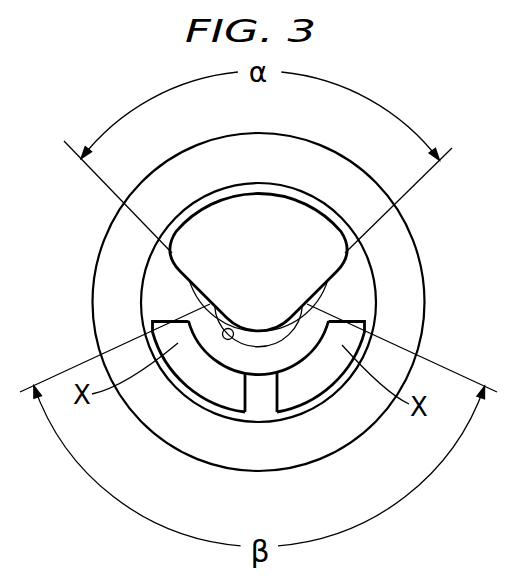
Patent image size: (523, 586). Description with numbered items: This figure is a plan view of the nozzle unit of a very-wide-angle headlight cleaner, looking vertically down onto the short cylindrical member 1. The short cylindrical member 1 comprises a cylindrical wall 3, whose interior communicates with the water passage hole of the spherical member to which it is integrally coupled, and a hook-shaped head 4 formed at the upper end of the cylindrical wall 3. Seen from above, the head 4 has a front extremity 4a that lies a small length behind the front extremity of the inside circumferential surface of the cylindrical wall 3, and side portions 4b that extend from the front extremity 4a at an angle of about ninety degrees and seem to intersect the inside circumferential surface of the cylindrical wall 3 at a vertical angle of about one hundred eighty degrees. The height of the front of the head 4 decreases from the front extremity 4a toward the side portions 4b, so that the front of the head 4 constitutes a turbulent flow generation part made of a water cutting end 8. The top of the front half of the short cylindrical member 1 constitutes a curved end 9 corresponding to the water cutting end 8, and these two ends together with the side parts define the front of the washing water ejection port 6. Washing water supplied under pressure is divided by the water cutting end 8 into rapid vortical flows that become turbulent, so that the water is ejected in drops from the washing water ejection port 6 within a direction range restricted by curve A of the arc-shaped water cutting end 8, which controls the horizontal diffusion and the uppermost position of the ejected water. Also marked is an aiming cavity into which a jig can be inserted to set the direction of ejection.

The short cylindrical member 1 is at (330, 287).
The cylindrical wall 3 is at (178, 345).
The head 4 is at (192, 263).
The front extremity 4a is at (259, 333).
The side portions 4b is at (190, 297).
The washing water ejection port 6 is at (233, 368).
The water cutting end 8 is at (338, 360).
The curved end 9 is at (301, 318).
The curve A is at (276, 329).